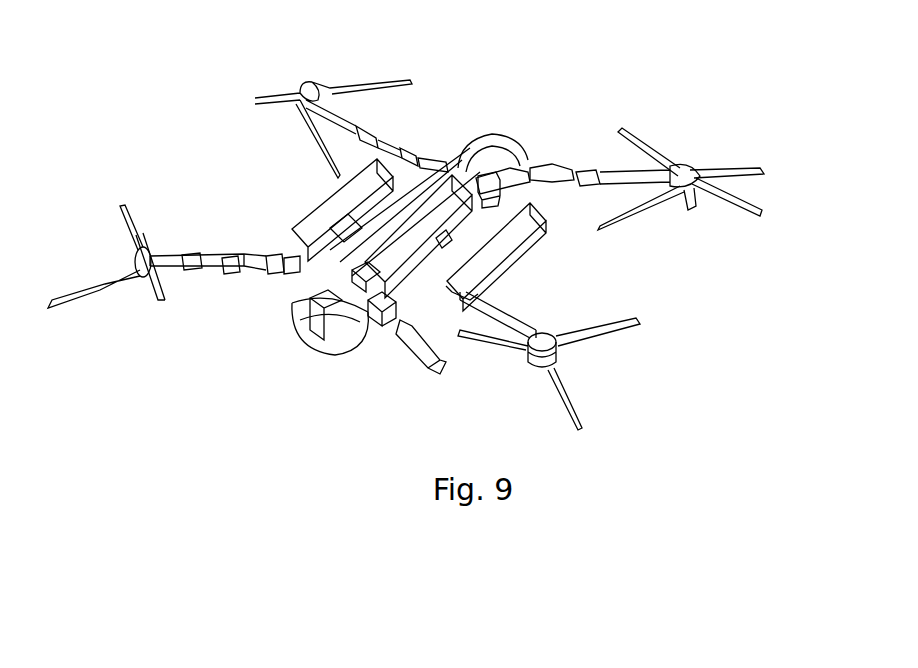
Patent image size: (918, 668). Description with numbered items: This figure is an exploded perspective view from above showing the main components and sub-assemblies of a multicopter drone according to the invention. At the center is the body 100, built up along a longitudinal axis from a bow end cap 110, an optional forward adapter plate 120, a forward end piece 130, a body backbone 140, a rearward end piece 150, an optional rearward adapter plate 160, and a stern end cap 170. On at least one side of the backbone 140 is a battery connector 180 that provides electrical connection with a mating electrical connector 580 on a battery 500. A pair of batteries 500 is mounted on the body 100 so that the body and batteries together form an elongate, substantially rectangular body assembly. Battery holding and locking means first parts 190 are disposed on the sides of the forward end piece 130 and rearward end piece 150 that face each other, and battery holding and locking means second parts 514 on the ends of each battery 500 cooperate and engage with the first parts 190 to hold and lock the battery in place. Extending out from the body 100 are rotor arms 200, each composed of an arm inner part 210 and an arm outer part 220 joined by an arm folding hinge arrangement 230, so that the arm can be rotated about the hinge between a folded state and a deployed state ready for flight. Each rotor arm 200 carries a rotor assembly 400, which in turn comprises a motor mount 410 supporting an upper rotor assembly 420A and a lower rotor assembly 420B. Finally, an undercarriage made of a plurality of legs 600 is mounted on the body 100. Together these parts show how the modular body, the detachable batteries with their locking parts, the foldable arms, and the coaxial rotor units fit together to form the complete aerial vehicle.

The body 100 is at (337, 352).
The bow end cap 110 is at (322, 325).
The forward adapter plate 120 is at (375, 307).
The forward end piece 130 is at (365, 276).
The body backbone 140 is at (428, 208).
The rearward end piece 150 is at (468, 163).
The rearward adapter plate 160 is at (497, 158).
The stern end cap 170 is at (483, 180).
The battery connector 180 is at (440, 243).
The battery holding and locking means first parts 190 is at (552, 172).
The rotor arm 200 is at (277, 277).
The arm inner part 210 is at (290, 265).
The arm outer part 220 is at (193, 263).
The arm folding hinge arrangement 230 is at (277, 267).
The rotor assembly 400 is at (550, 362).
The motor mount 410 is at (688, 197).
The upper rotor assembly 420A is at (688, 173).
The lower rotor assembly 420B is at (687, 200).
The battery 500 is at (323, 202).
The battery holding and locking means second parts 514 is at (457, 293).
The electrical connector 580 is at (357, 218).
The leg 600 is at (428, 363).